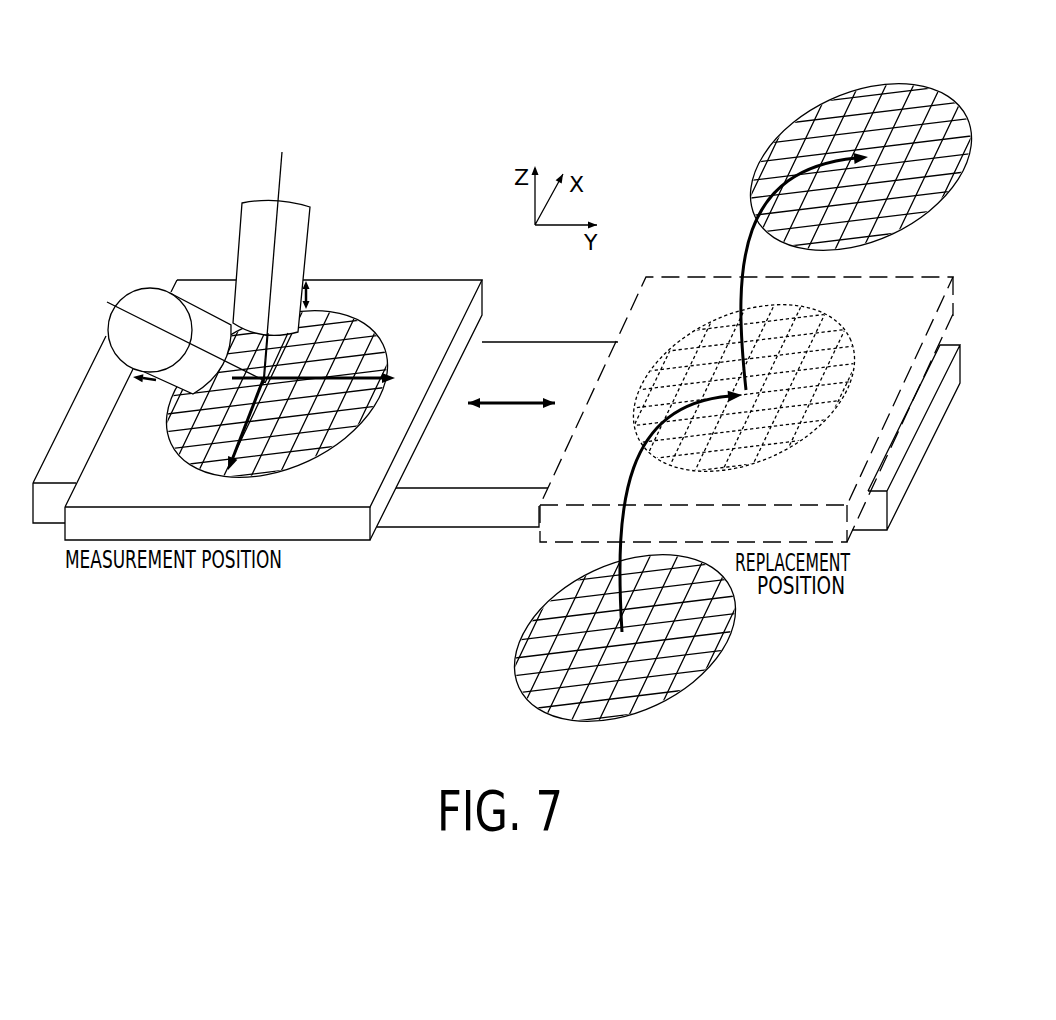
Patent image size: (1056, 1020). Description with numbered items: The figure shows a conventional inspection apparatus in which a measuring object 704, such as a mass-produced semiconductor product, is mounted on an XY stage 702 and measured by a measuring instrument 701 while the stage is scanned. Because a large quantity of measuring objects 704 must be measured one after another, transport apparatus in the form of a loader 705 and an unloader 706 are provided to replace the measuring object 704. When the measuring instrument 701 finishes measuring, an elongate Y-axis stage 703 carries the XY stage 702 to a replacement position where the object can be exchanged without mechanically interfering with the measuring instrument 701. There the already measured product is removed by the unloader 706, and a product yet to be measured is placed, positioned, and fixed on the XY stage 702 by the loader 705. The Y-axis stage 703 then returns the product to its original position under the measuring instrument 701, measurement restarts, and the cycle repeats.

The measuring instrument 701 is at (147, 302).
The XY stage 702 is at (320, 527).
The Y-axis stage 703 is at (472, 510).
The measuring object 704 is at (336, 310).
The loader 705 is at (625, 641).
The unloader 706 is at (861, 164).